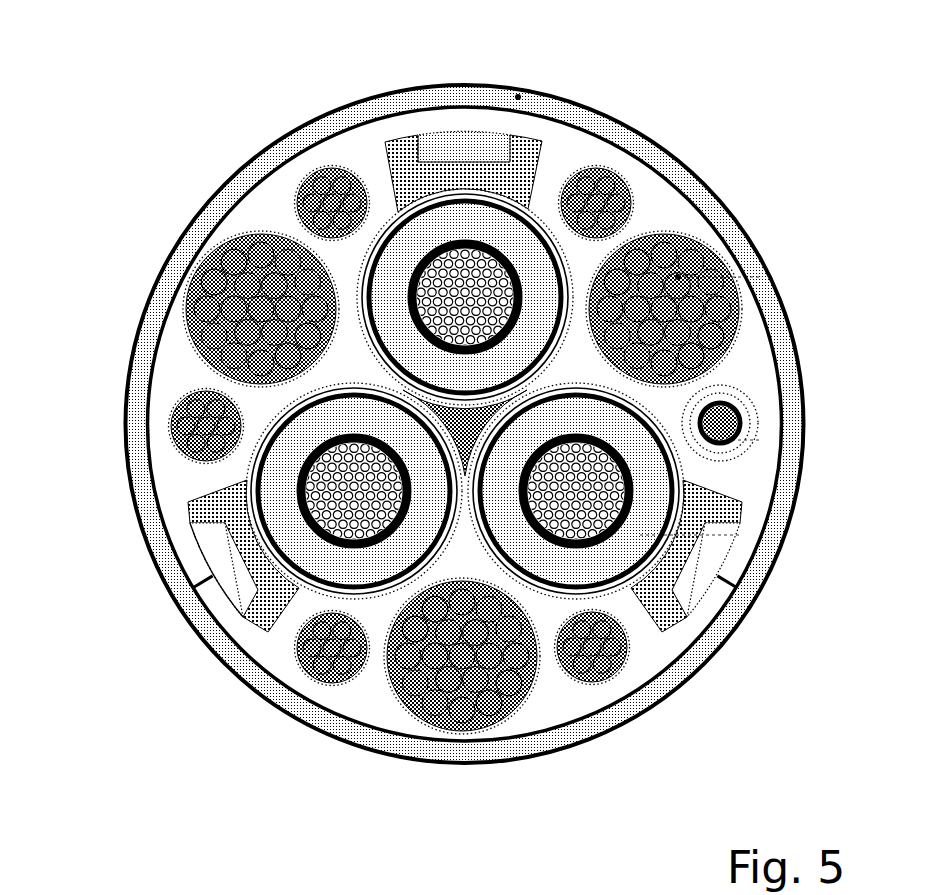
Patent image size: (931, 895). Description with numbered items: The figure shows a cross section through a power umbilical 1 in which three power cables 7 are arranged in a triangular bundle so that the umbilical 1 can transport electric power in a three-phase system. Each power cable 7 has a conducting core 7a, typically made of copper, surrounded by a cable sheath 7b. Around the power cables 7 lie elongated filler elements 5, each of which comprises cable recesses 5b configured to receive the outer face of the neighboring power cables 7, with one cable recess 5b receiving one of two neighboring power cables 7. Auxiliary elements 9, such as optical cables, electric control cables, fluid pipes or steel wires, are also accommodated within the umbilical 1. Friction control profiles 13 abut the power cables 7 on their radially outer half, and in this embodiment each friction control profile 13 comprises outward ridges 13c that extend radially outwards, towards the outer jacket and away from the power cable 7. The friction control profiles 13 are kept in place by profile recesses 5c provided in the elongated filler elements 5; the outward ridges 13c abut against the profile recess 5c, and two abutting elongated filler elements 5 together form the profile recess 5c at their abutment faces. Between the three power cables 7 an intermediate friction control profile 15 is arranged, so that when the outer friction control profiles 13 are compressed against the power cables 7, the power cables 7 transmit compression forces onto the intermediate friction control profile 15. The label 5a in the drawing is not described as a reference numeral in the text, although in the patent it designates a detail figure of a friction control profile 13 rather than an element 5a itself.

The umbilical 1 is at (263, 112).
The elongated filler element 5 is at (277, 207).
The sheath wedge element 5a is at (460, 132).
The cable recess 5b is at (337, 588).
The profile recess 5c is at (218, 592).
The power cable 7 is at (659, 601).
The conducting core 7a is at (592, 508).
The cable sheath 7b is at (572, 593).
The auxiliary element 9 is at (600, 193).
The friction control profile 13 is at (470, 170).
The outward ridge 13c is at (207, 580).
The intermediate friction control profile 15 is at (465, 432).